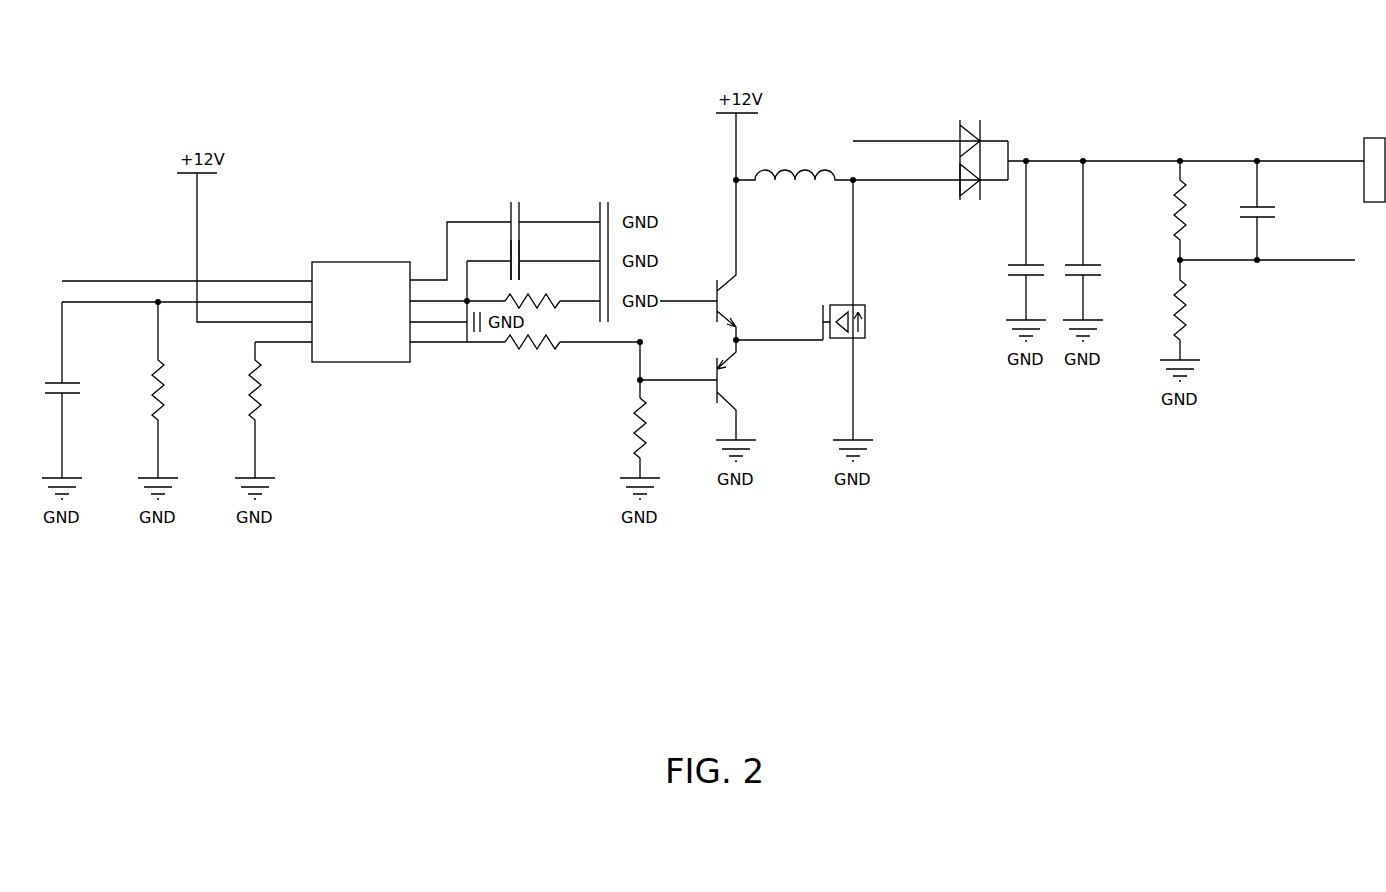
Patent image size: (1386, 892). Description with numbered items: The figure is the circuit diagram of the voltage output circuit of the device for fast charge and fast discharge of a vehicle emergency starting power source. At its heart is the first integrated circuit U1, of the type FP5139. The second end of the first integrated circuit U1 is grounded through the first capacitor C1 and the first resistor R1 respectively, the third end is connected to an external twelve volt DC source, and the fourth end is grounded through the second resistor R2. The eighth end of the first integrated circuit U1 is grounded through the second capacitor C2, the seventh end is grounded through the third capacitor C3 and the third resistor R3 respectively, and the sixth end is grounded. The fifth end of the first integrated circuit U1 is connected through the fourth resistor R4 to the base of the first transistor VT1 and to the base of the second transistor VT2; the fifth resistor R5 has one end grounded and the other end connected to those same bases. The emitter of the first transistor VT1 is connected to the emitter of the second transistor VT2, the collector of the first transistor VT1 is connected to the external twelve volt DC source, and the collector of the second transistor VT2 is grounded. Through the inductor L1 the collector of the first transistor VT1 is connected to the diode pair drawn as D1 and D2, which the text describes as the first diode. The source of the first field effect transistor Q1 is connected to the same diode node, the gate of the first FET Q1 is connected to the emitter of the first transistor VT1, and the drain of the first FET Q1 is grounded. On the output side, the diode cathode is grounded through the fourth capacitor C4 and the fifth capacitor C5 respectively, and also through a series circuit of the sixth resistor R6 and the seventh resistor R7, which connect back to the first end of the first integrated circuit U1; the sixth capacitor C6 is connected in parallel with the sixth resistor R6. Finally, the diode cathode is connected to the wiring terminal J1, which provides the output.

The first capacitor C1 is at (51, 390).
The first resistor R1 is at (171, 390).
The second resistor R2 is at (268, 410).
The first integrated circuit U1 is at (361, 299).
The second capacitor C2 is at (529, 239).
The third capacitor C3 is at (529, 260).
The third resistor R3 is at (532, 291).
The fourth resistor R4 is at (532, 331).
The fifth resistor R5 is at (654, 428).
The first transistor VT1 is at (745, 260).
The second transistor VT2 is at (745, 390).
The first field effect transistor Q1 is at (864, 310).
The inductor L1 is at (794, 163).
The diode D1 is at (972, 149).
The diode D2 is at (972, 194).
The fourth capacitor C4 is at (1030, 240).
The fifth capacitor C5 is at (1087, 240).
The sixth capacitor C6 is at (1262, 210).
The sixth resistor R6 is at (1195, 210).
The seventh resistor R7 is at (1195, 310).
The wiring terminal J1 is at (1374, 158).